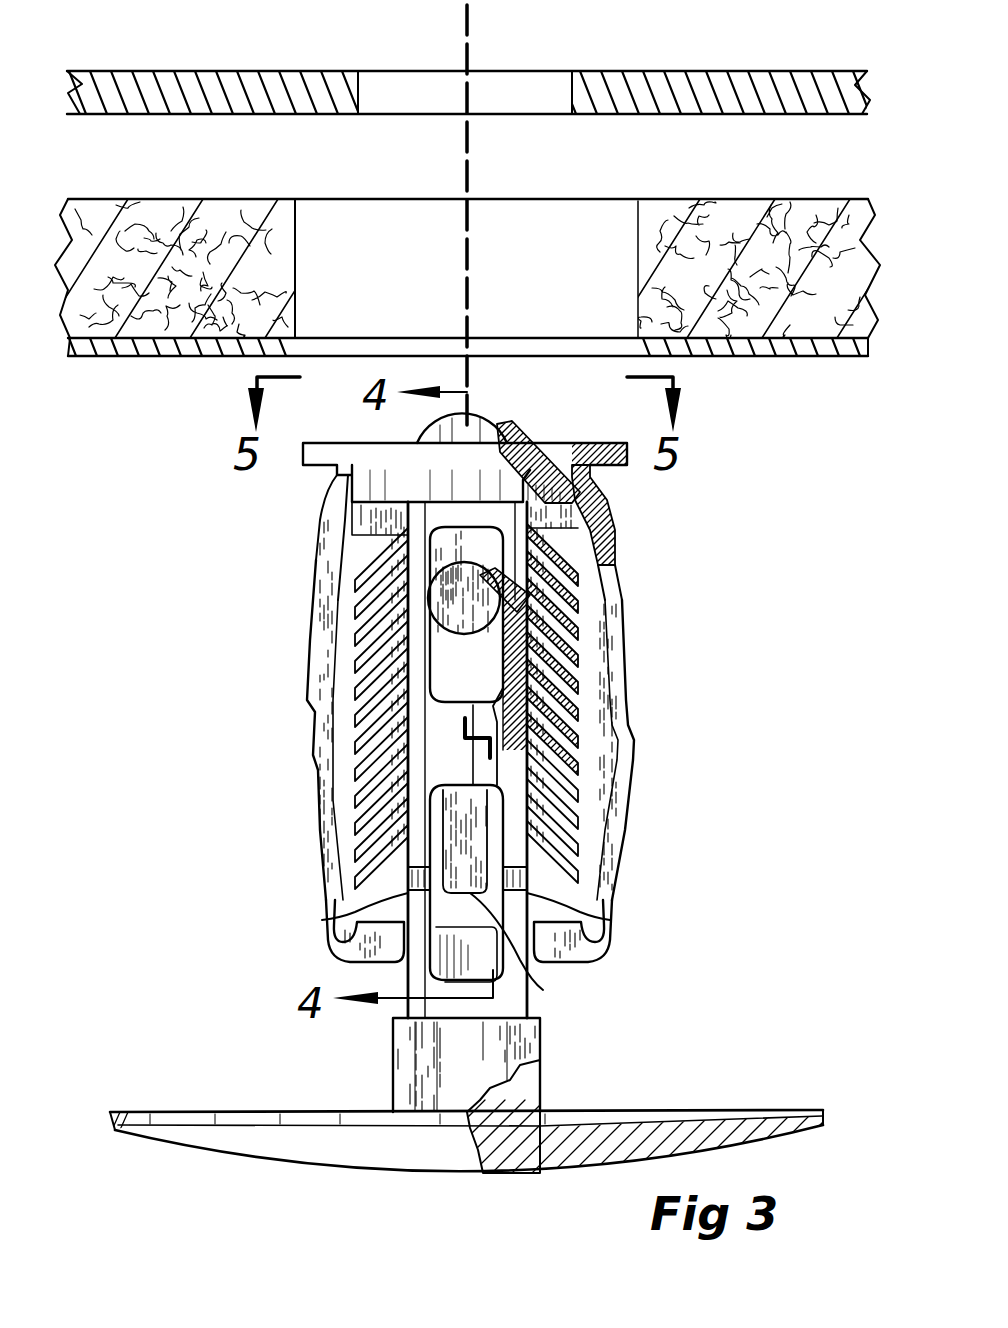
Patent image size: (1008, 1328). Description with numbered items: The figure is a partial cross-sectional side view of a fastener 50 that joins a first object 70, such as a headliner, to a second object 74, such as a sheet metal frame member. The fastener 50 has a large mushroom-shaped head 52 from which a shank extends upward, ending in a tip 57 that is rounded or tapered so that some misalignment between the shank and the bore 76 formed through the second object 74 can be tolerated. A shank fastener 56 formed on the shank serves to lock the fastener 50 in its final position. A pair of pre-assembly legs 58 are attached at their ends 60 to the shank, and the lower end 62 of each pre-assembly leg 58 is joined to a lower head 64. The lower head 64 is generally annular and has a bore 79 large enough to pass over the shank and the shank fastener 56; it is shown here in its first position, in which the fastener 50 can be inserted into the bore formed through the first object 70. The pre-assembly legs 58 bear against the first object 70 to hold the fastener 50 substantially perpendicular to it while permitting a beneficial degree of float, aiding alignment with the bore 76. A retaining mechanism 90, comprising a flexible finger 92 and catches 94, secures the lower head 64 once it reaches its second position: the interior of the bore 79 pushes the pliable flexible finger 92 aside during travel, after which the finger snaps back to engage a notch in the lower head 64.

The fastener 50 is at (285, 584).
The mushroom-shaped head 52 is at (150, 1112).
The shank fastener 56 is at (345, 758).
The tip 57 is at (492, 434).
The pre-assembly legs 58 is at (307, 662).
The ends 60 is at (345, 950).
The lower end 62 is at (320, 506).
The lower head 64 is at (335, 443).
The first object 70 is at (132, 357).
The second object 74 is at (182, 71).
The bore 76 is at (572, 92).
The bore 79 is at (565, 452).
The retaining mechanism 90 is at (560, 866).
The flexible finger 92 is at (543, 990).
The catches 94 is at (408, 897).